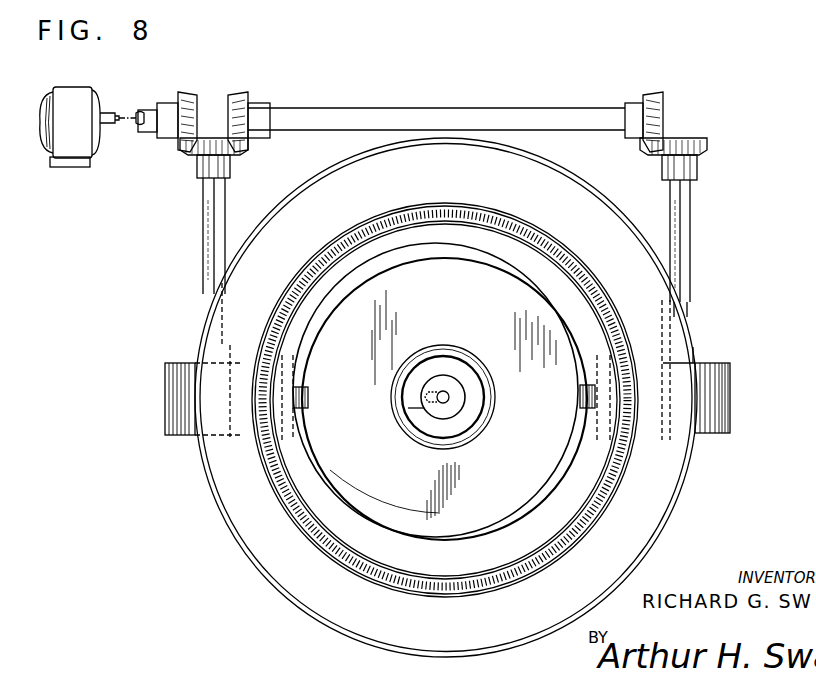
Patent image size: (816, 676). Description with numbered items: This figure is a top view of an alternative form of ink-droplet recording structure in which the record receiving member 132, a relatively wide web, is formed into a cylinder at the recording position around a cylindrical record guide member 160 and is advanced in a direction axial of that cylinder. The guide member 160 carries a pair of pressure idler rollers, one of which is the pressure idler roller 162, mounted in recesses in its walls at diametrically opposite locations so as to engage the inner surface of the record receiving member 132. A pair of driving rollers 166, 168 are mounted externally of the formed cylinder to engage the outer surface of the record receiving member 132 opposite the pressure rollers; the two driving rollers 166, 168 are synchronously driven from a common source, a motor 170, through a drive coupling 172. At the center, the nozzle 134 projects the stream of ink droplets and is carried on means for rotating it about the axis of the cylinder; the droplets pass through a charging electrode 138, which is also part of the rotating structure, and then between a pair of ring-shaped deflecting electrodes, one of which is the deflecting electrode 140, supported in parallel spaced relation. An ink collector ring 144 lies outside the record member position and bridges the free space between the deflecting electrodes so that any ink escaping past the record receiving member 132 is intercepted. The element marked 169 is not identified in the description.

The record receiving member 132 is at (627, 457).
The nozzle 134 is at (445, 392).
The charging electrode 138 is at (413, 392).
The deflecting electrode 140 is at (352, 447).
The ink collector ring 144 is at (263, 577).
The cylindrical record guide member 160 is at (320, 290).
The pressure idler roller 162 is at (303, 388).
The driving roller 166 is at (170, 393).
The driving roller 168 is at (715, 398).
The bearing block 169 is at (580, 413).
The motor 170 is at (80, 128).
The drive coupling 172 is at (436, 91).